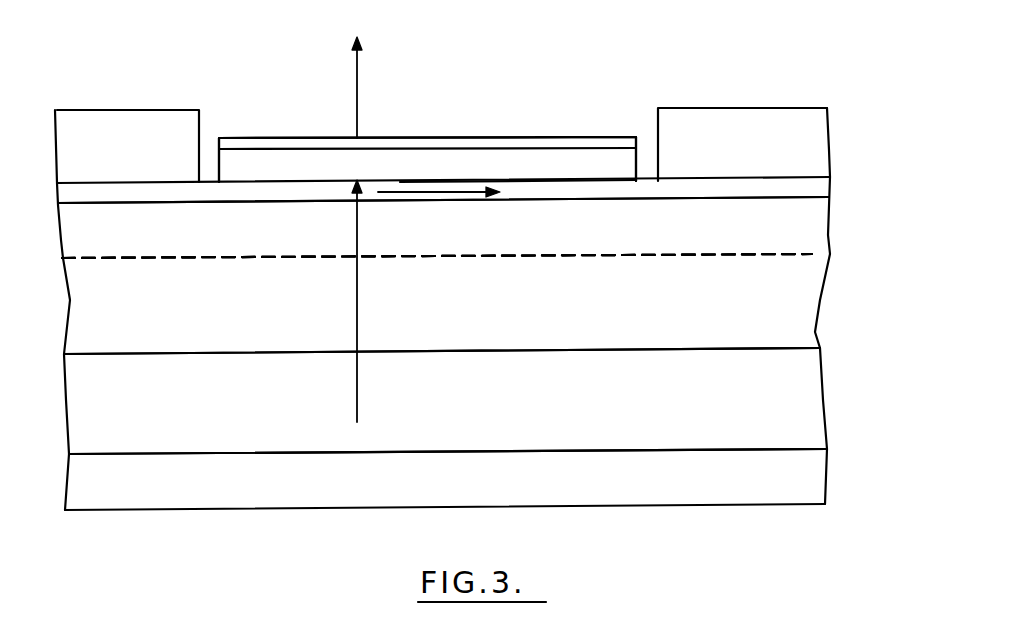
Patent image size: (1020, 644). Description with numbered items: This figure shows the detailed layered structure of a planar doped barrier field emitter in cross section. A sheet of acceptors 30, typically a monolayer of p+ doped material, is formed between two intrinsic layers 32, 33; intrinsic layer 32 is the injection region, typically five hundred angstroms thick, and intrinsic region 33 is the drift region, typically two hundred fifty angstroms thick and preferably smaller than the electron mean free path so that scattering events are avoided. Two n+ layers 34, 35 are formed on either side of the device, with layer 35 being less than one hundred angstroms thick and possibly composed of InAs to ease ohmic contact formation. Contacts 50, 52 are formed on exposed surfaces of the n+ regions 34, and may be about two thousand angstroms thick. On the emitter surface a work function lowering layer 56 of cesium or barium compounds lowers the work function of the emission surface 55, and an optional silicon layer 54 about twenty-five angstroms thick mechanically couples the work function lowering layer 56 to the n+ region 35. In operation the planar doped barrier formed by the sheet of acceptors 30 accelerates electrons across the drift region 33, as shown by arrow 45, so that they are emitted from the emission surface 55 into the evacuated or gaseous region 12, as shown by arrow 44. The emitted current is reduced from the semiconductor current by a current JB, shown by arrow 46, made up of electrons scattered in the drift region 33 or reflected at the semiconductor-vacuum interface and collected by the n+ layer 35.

The evacuated or gaseous region 12 is at (448, 23).
The sheet of acceptors 30 is at (800, 255).
The intrinsic layer (injection region) 32 is at (812, 334).
The intrinsic region (drift region) 33 is at (818, 234).
The n+ layer 34 is at (812, 398).
The n+ layer (contact layer) 35 is at (820, 183).
The contact 50 is at (810, 480).
The contact 52 is at (820, 150).
The silicon layer 54 is at (320, 162).
The emission surface 55 is at (571, 136).
The work function lowering layer 56 is at (461, 146).
The current JB is at (537, 172).
The arrow (electrons emitted into vacuum) 44 is at (359, 92).
The arrow (semiconductor current) 45 is at (356, 392).
The arrow (reflected current) 46 is at (433, 193).